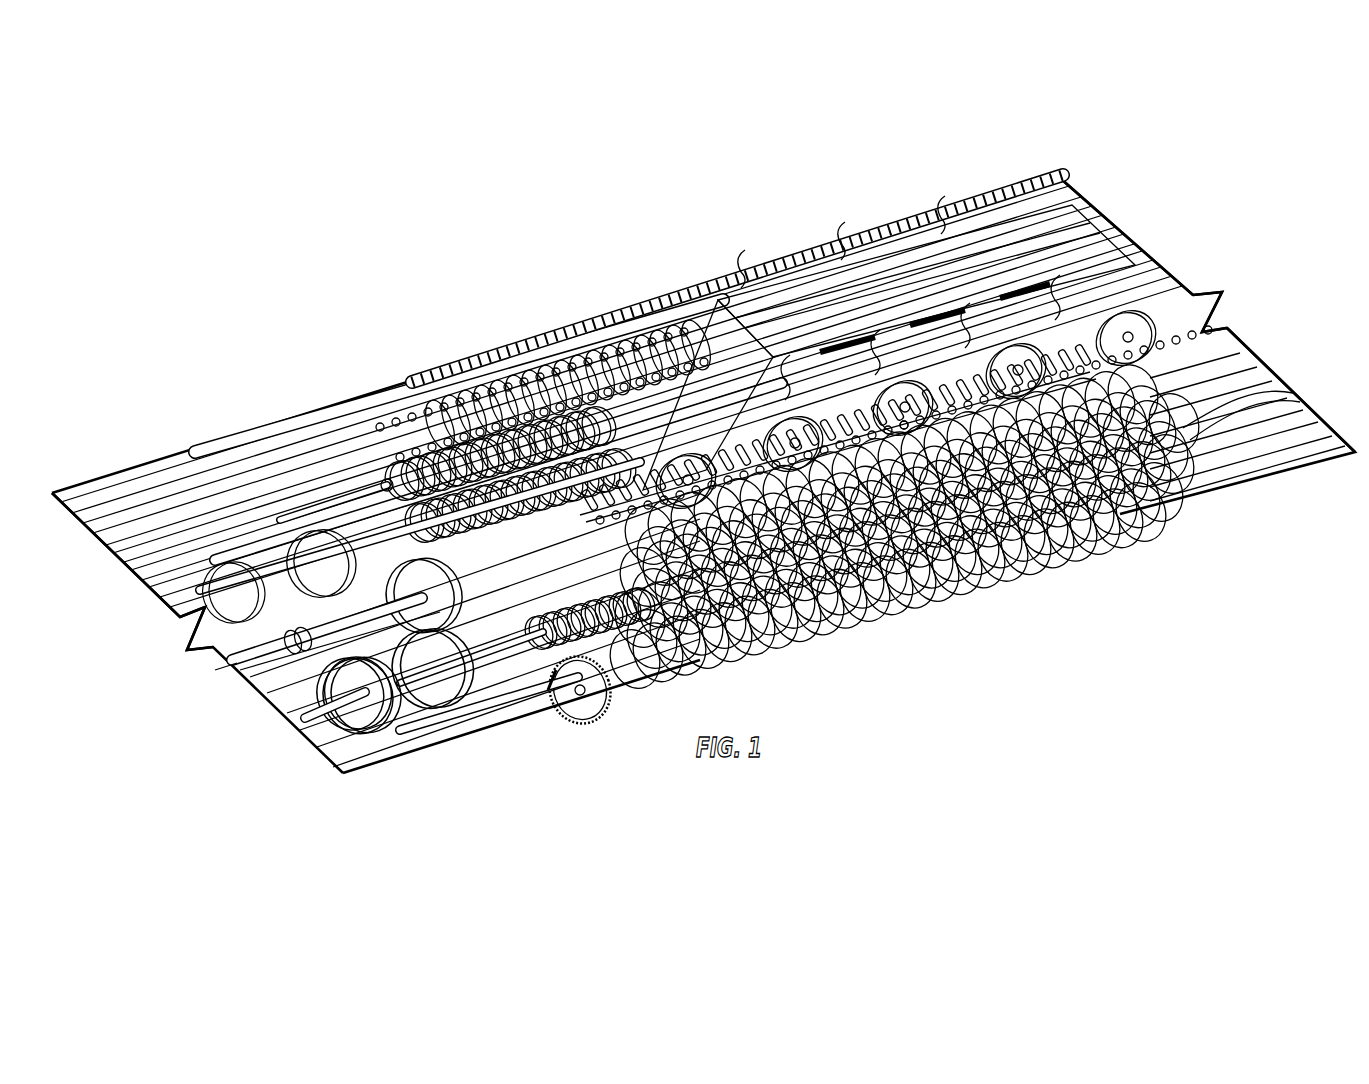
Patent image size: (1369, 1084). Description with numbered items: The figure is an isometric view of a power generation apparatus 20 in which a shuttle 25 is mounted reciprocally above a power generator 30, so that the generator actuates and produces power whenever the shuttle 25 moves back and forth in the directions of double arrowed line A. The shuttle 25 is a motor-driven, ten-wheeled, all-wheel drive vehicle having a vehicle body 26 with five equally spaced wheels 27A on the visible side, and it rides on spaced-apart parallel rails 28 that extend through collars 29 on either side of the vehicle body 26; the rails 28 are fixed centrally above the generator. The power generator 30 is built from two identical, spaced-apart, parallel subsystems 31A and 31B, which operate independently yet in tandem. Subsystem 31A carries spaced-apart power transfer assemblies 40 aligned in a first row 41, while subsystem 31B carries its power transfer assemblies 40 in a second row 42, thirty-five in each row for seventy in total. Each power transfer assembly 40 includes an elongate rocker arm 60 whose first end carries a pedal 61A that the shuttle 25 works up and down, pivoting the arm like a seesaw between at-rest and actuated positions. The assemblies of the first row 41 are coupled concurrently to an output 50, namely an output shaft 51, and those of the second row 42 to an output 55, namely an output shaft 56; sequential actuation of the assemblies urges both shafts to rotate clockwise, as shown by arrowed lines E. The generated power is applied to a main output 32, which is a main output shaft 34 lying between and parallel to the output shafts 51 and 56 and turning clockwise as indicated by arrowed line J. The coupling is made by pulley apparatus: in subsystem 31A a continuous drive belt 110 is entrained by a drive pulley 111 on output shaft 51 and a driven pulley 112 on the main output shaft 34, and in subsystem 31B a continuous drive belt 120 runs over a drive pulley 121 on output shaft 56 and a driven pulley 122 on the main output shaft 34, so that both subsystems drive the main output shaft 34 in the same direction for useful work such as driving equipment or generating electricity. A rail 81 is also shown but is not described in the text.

The power generation apparatus 20 is at (820, 200).
The shuttle 25 is at (1042, 200).
The vehicle body 26 is at (1070, 235).
The wheels 27A is at (1135, 345).
The rails 28 is at (560, 400).
The collars 29 is at (690, 417).
The power generator 30 is at (1240, 338).
The subsystem 31A is at (1296, 390).
The subsystem 31B is at (1085, 178).
The main output 32 is at (253, 670).
The main output shaft 34 is at (235, 660).
The power transfer assemblies 40 is at (450, 360).
The first row 41 is at (547, 718).
The second row 42 is at (350, 463).
The output 50 is at (313, 740).
The output shaft 51 is at (300, 738).
The output 55 is at (187, 588).
The output shaft 56 is at (175, 606).
The rocker arm 60 is at (520, 400).
The pedal 61A is at (633, 503).
The rail 81 is at (165, 612).
The continuous drive belt 110 is at (312, 718).
The drive pulley 111 is at (365, 722).
The driven pulley 112 is at (380, 722).
The continuous drive belt 120 is at (295, 545).
The drive pulley 121 is at (205, 612).
The driven pulley 122 is at (240, 560).
The double arrowed line A is at (905, 290).
The arrowed line E is at (400, 553).
The arrowed line J is at (423, 693).